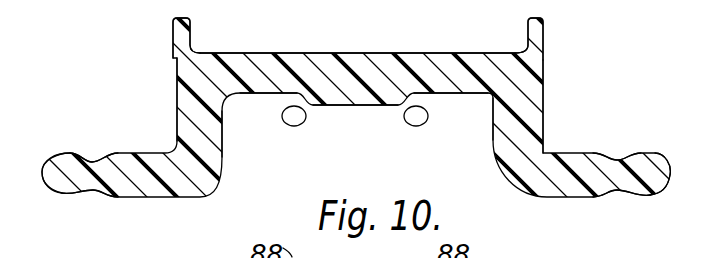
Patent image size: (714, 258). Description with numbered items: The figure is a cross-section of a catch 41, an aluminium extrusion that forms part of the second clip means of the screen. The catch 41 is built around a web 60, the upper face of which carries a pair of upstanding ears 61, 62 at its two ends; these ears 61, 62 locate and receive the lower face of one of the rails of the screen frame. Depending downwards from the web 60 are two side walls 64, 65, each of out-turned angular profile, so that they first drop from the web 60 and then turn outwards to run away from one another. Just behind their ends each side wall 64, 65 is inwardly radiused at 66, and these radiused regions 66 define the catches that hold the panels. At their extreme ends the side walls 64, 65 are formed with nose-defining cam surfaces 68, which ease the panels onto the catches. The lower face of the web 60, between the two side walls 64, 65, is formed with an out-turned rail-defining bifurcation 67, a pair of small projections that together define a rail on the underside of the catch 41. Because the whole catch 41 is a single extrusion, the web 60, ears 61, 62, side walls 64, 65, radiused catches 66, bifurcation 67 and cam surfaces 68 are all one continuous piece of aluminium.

The catch 41 is at (543, 91).
The web 60 is at (445, 82).
The upstanding ear 61 is at (540, 42).
The upstanding ear 62 is at (175, 40).
The side wall 64 is at (532, 124).
The side wall 65 is at (190, 113).
The inwardly radiused portions 66 is at (93, 160).
The rail-defining bifurcation 67 is at (304, 128).
The nose-defining cam surfaces 68 is at (53, 162).